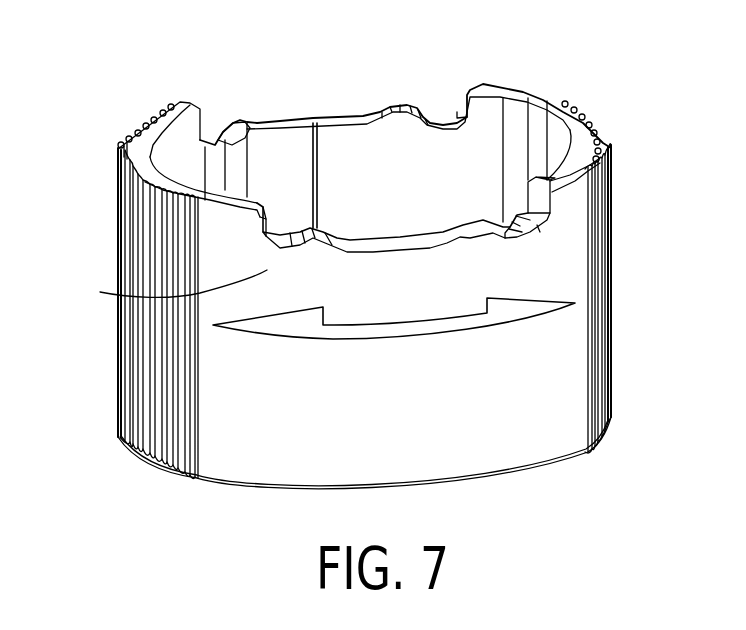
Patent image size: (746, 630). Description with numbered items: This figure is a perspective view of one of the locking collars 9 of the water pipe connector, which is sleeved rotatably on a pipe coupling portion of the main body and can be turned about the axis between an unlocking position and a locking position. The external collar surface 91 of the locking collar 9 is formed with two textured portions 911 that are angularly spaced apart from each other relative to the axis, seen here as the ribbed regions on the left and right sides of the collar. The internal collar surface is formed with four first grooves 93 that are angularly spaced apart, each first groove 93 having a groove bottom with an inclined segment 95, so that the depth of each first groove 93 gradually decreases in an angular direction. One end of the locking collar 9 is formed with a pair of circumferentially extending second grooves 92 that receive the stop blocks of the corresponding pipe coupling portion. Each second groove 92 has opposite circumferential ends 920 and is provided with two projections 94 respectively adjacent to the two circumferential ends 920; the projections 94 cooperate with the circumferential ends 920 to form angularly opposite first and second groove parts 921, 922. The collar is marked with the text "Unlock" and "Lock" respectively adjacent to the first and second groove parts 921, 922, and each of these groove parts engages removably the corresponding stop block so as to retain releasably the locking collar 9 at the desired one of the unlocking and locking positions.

The locking collar 9 is at (367, 263).
The external collar surface 91 is at (567, 325).
The textured portion 911 is at (160, 286).
The second groove 92 is at (347, 115).
The circumferential end 920 is at (250, 200).
The first groove part 921 is at (300, 238).
The second groove part 922 is at (560, 253).
The first groove 93 is at (118, 183).
The projection 94 is at (237, 118).
The inclined segment 95 is at (227, 120).